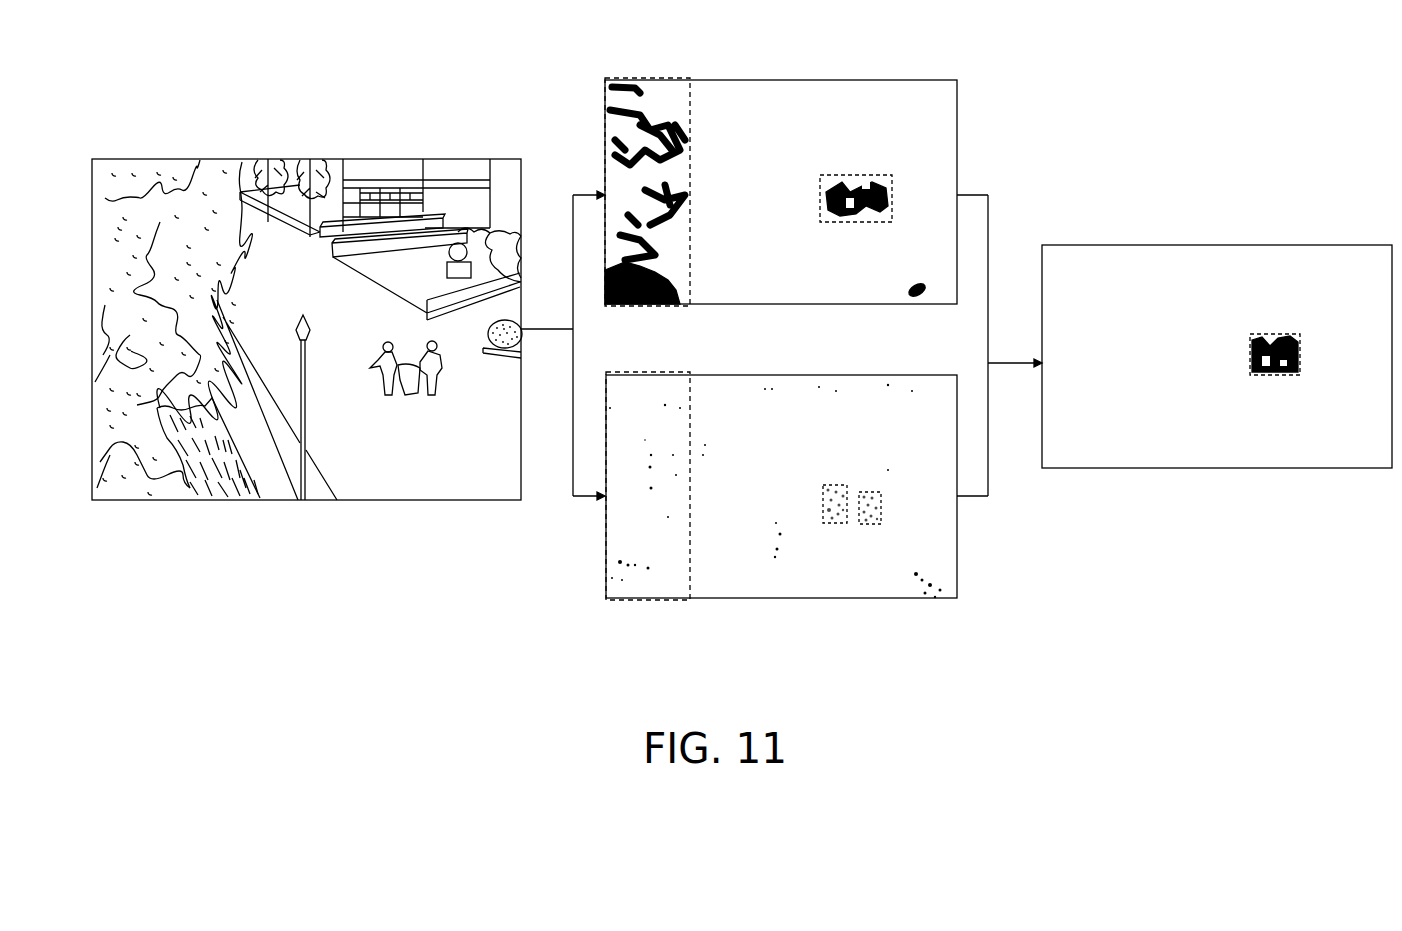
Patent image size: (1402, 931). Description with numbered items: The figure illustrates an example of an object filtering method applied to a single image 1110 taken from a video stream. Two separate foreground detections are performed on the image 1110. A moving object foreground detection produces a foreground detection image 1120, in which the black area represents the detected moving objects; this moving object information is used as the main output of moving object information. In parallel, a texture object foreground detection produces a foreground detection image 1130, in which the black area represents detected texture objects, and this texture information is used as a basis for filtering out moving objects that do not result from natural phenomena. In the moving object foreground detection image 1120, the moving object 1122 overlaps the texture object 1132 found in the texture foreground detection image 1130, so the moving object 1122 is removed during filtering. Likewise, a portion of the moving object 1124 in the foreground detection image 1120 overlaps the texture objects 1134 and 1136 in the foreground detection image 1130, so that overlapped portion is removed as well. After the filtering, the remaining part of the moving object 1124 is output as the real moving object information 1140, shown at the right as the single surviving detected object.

The image 1110 is at (370, 159).
The foreground detection image 1120 is at (781, 167).
The moving object 1122 is at (690, 137).
The moving object 1124 is at (857, 175).
The foreground detection image 1130 is at (741, 507).
The texture object 1132 is at (606, 542).
The texture object 1134 is at (820, 493).
The texture object 1136 is at (882, 500).
The real moving object information 1140 is at (1275, 334).